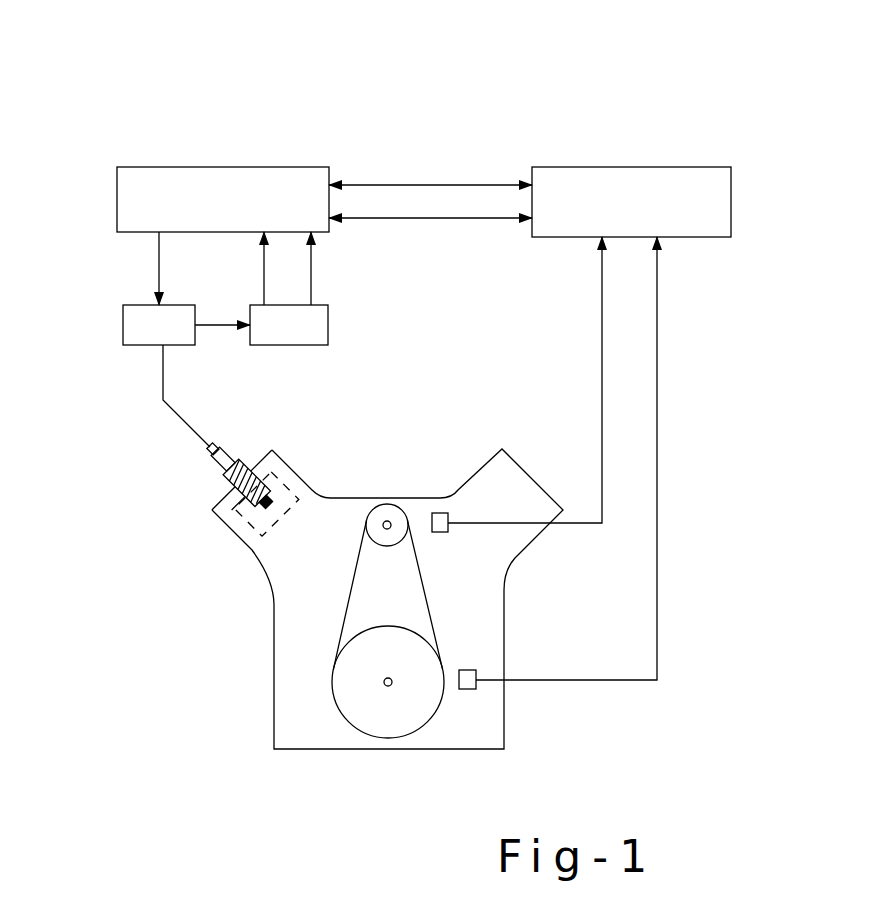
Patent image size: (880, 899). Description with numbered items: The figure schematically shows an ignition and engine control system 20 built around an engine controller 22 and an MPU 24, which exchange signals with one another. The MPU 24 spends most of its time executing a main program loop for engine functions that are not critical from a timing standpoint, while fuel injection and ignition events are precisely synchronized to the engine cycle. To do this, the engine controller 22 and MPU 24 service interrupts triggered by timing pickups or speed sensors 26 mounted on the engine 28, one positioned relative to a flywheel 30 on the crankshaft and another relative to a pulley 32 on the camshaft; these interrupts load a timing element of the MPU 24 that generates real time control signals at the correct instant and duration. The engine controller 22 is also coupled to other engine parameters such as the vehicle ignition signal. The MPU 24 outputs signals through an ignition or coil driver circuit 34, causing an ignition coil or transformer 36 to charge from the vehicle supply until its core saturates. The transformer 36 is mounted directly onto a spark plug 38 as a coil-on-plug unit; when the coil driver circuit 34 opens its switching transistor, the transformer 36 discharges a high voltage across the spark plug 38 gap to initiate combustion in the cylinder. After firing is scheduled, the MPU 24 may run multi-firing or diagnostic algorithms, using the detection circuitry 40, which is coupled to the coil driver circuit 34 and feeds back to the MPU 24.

The ignition and engine control system 20 is at (440, 110).
The engine controller 22 is at (594, 167).
The MPU 24 is at (216, 167).
The timing pickups or speed sensors 26 is at (443, 532).
The engine 28 is at (528, 470).
The flywheel 30 is at (413, 713).
The pulley 32 is at (397, 503).
The ignition or coil driver circuit 34 is at (123, 322).
The ignition coil or transformer 36 is at (220, 472).
The spark plug 38 is at (223, 520).
The detection circuitry 40 is at (329, 317).